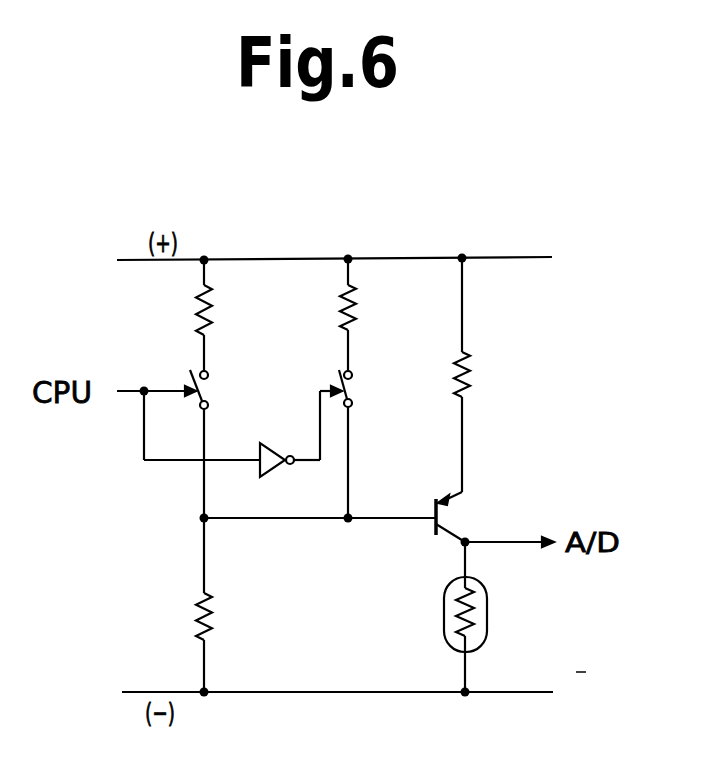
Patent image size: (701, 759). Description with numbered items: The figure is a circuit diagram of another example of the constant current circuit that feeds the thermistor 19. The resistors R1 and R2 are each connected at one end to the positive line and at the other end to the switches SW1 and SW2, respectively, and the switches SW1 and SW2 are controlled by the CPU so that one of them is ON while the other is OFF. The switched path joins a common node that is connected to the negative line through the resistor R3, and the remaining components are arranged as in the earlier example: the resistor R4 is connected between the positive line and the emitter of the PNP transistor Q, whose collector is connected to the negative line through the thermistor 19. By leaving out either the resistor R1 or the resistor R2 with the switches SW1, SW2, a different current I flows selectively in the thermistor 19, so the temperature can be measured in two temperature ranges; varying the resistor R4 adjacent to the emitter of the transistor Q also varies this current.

The thermistor 19 is at (444, 639).
The resistor R1 is at (217, 310).
The resistor R2 is at (366, 307).
The resistor R3 is at (221, 616).
The resistor R4 is at (482, 374).
The switch SW1 is at (223, 389).
The switch SW2 is at (374, 388).
The PNP transistor Q is at (452, 526).